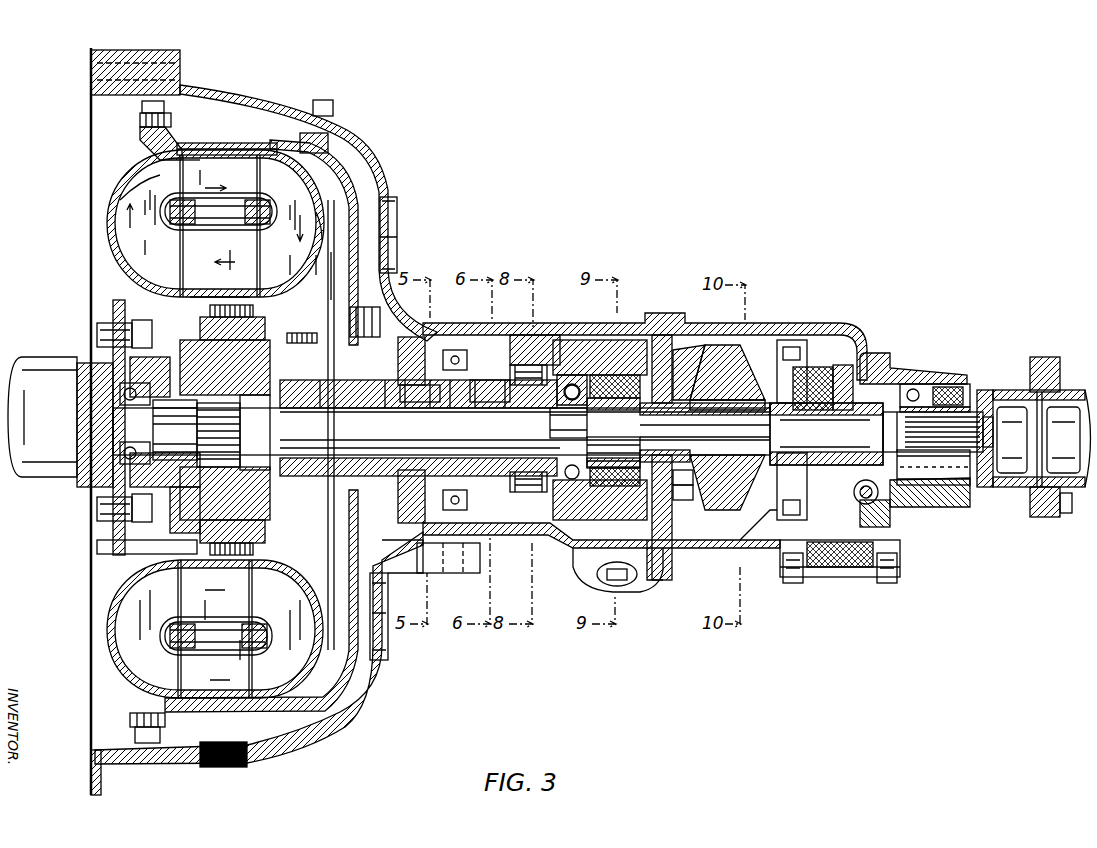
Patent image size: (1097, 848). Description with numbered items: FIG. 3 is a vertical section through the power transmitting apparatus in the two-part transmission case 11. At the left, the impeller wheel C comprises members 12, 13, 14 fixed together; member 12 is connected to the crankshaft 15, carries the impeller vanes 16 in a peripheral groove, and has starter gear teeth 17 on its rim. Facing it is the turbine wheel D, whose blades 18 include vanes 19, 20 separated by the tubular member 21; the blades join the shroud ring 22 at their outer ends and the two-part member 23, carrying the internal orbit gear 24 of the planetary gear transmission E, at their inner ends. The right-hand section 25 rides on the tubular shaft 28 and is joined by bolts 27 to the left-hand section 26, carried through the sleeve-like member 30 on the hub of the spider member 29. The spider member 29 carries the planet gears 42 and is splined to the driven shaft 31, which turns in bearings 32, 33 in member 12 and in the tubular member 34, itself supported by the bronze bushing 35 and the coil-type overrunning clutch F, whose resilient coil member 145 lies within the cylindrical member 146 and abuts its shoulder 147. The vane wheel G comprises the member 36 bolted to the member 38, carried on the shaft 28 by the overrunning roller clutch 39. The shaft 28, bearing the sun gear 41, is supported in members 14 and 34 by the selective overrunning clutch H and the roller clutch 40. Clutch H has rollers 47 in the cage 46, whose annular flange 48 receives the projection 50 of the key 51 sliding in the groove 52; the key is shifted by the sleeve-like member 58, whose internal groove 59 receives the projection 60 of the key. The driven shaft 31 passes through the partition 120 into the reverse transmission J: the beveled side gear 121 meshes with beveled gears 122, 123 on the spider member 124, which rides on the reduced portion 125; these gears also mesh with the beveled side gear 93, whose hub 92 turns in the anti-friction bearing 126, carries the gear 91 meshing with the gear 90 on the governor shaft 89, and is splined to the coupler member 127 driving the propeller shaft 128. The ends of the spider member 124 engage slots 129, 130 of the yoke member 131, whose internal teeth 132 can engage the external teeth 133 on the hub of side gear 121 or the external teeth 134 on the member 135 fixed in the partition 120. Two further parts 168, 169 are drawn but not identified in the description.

The transmission case 11 is at (360, 176).
The member 12 is at (107, 238).
The member 13 is at (386, 187).
The member 14 is at (378, 322).
The crankshaft 15 is at (30, 378).
The impeller wheel vanes 16 is at (130, 198).
The gear teeth 17 is at (140, 108).
The blades 18 is at (215, 144).
The vanes 19 is at (190, 245).
The vanes 20 is at (198, 192).
The ring-shaped tubular member 21 is at (265, 202).
The shroud ring 22 is at (247, 144).
The two-part member 23 is at (220, 300).
The internal orbit gear 24 is at (185, 545).
The right-hand section 25 is at (300, 405).
The left-hand section 26 is at (212, 311).
The bolts 27 is at (300, 330).
The tubular shaft 28 is at (358, 390).
The spider member 29 is at (190, 345).
The sleeve-like member 30 is at (95, 482).
The driven shaft 31 is at (316, 212).
The bearing 32 is at (125, 390).
The bearing 33 is at (578, 360).
The tubular member 34 is at (548, 342).
The bronze bushing 35 is at (520, 340).
The member 36 is at (330, 252).
The member 38 is at (275, 546).
The overrunning roller clutch 39 is at (327, 395).
The overrunning roller clutch 40 is at (527, 365).
The sun gear 41 is at (255, 432).
The planet gears 42 is at (196, 433).
The cage 46 is at (385, 385).
The rollers 47 is at (400, 385).
The annular flange 48 is at (448, 382).
The projection 50 is at (425, 390).
The key 51 is at (468, 372).
The groove 52 is at (505, 400).
The sleeve-like member 58 is at (468, 500).
The internal groove 59 is at (472, 392).
The radially extending projection 60 is at (478, 384).
The shaft 89 is at (878, 488).
The gear 90 is at (880, 505).
The gear 91 is at (880, 408).
The hub 92 is at (895, 408).
The beveled side gear 93 is at (866, 350).
The partition 120 is at (714, 335).
The beveled side gear 121 is at (750, 505).
The beveled gear 122 is at (822, 375).
The beveled gear 123 is at (892, 520).
The spider member 124 is at (783, 342).
The reduced portion 125 is at (812, 440).
The anti-friction bearing 126 is at (915, 384).
The coupler member 127 is at (1035, 360).
The driven shaft 128 is at (1092, 465).
The elongated slot 129 is at (812, 365).
The elongated slot 130 is at (825, 575).
The yoke member 131 is at (750, 372).
The internal gear teeth 132 is at (697, 396).
The external teeth 133 is at (686, 500).
The external teeth 134 is at (683, 485).
The member 135 is at (616, 452).
The resilient coil member 145 is at (565, 545).
The internal cylindrical member 146 is at (676, 372).
The shoulder 147 is at (535, 538).
The collar 168 is at (556, 428).
The bearing 169 is at (590, 412).
The impeller wheel C is at (125, 168).
The turbine wheel D is at (194, 149).
The planetary gear transmission E is at (185, 500).
The coil-type selective overrunning clutch F is at (578, 388).
The vane wheel G is at (324, 266).
The selective-type overrunning clutch H is at (411, 424).
The planetary gear transmission J is at (738, 545).